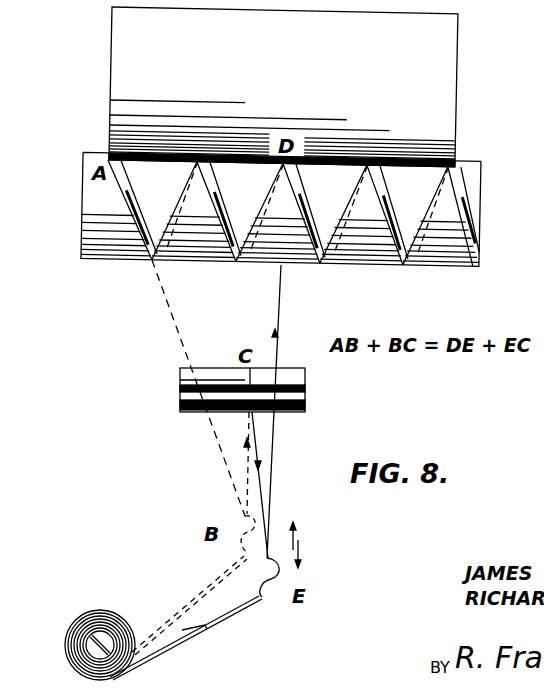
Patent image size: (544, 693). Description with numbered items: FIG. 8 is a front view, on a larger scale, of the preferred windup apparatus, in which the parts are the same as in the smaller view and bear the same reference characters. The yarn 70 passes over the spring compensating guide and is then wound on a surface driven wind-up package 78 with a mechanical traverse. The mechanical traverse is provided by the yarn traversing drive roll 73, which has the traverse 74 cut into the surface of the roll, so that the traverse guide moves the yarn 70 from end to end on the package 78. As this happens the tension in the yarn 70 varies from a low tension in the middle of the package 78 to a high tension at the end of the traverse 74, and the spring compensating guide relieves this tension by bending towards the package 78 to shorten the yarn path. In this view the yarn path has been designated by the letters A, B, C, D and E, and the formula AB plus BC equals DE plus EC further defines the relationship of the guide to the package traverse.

The yarn 70 is at (284, 292).
The yarn traversing drive roll 73 is at (122, 261).
The traverse 74 is at (156, 261).
The wind-up package 78 is at (127, 88).